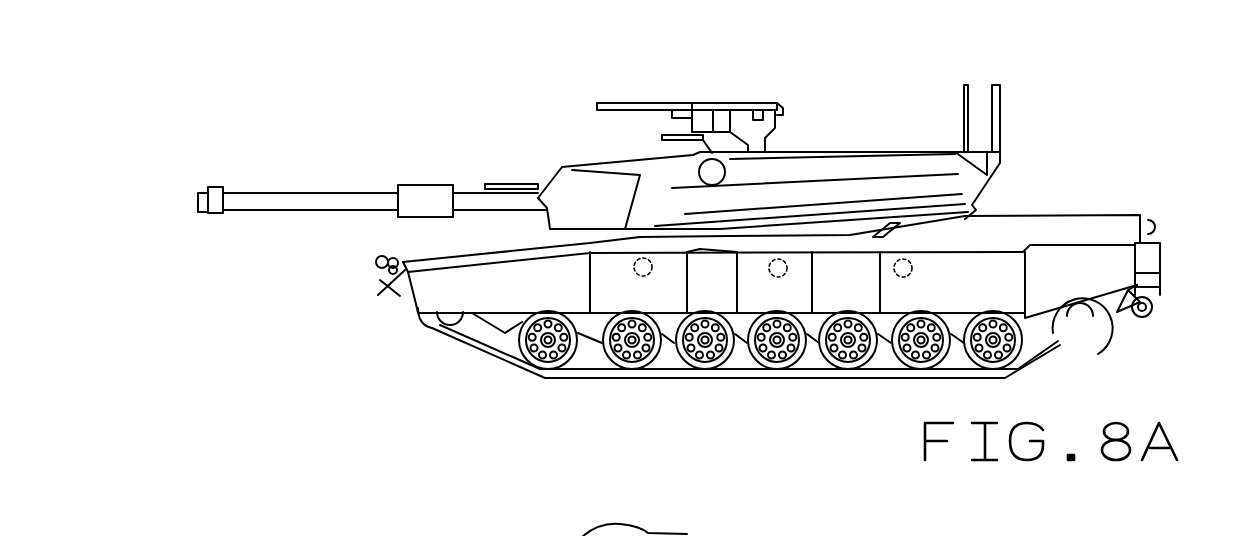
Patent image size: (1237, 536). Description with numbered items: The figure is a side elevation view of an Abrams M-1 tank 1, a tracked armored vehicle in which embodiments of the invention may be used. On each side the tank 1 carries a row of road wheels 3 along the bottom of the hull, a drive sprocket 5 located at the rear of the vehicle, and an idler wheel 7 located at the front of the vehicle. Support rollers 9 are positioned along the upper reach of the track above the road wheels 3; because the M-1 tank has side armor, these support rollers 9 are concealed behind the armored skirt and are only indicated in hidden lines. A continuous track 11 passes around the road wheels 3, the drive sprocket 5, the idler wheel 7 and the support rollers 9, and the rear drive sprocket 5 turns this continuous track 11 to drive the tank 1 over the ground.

The Abrams M-1 tank 1 is at (1050, 128).
The road wheels 3 is at (543, 362).
The drive sprocket 5 is at (1098, 318).
The idler wheel 7 is at (448, 319).
The support rollers 9 is at (645, 276).
The continuous track 11 is at (808, 380).